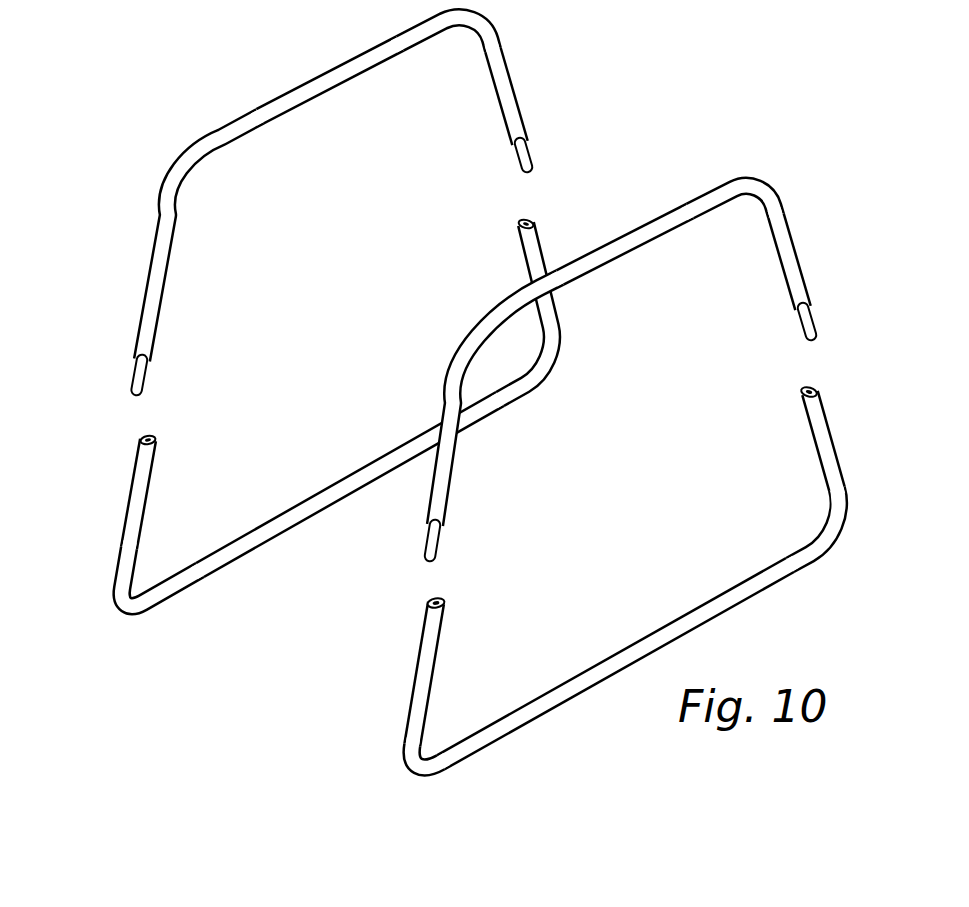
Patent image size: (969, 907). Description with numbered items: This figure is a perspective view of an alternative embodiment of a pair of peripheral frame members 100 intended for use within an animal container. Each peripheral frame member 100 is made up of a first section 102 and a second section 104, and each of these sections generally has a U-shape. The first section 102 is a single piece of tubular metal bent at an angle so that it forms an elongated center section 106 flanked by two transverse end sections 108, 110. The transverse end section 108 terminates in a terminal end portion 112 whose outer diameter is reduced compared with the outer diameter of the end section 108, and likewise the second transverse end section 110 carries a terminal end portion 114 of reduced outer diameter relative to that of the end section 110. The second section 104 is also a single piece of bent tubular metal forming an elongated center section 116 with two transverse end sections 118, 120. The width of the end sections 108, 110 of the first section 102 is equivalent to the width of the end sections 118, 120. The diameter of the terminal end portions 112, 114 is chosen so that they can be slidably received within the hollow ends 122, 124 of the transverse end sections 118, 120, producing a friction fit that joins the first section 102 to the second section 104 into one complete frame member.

The peripheral frame member 100 is at (475, 392).
The first section 102 is at (502, 42).
The second section 104 is at (152, 603).
The elongated center section 106 is at (305, 90).
The first transverse end section 108 is at (500, 78).
The second transverse end section 110 is at (155, 272).
The terminal end portion 112 is at (531, 152).
The terminal end portion 114 is at (142, 381).
The elongated center section 116 is at (310, 497).
The first transverse end section 118 is at (520, 251).
The second transverse end section 120 is at (123, 518).
The hollow end 122 is at (523, 219).
The hollow end 124 is at (146, 437).